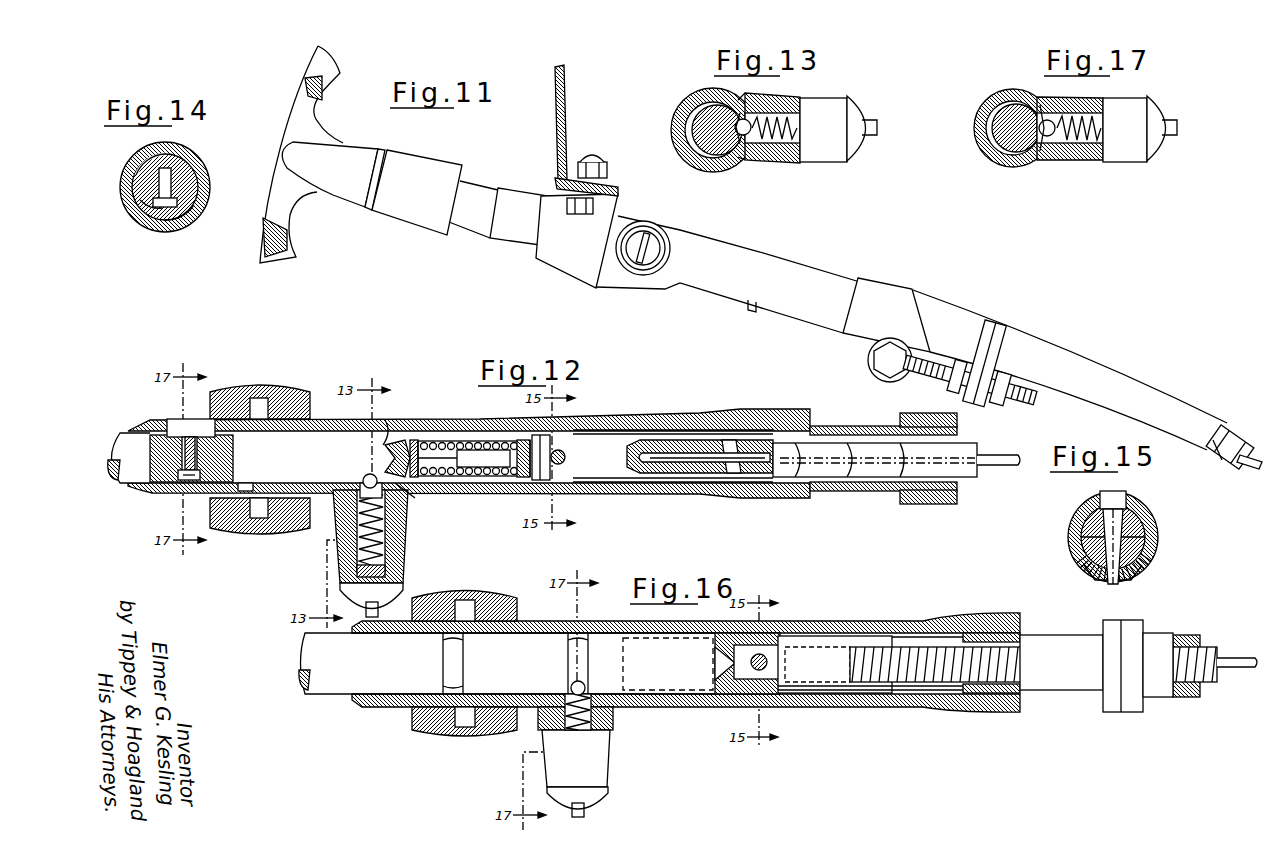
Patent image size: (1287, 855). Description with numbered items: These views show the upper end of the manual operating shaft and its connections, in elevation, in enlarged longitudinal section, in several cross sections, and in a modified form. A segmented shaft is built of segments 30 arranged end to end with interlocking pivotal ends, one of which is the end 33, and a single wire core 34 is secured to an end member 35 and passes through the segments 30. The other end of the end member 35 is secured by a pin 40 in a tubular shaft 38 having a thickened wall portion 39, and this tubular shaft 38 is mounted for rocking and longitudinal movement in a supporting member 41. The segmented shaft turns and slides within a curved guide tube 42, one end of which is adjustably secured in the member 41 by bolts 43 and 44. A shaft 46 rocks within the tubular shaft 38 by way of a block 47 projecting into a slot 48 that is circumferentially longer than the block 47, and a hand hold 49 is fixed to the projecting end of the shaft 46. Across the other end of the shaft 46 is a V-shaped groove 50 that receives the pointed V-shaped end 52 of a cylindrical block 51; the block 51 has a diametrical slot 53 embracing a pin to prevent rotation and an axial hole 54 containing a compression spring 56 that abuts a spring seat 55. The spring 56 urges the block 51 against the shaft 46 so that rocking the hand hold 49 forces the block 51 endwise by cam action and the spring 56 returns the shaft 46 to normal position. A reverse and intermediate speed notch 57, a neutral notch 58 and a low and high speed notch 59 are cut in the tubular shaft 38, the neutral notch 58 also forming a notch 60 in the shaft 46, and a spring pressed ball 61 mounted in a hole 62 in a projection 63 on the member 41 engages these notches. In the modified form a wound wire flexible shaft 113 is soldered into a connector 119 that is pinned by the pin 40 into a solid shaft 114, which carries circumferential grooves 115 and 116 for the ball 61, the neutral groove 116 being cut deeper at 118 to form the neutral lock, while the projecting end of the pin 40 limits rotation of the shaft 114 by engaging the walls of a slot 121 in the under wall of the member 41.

In FIG. 11, the segments 30 is at (1212, 452).
In FIG. 12, the segments 30 is at (867, 472).
In FIG. 11, the interlocking pivotal end 33 is at (1240, 436).
In FIG. 11, the wire core 34 is at (1246, 464).
In FIG. 12, the wire core 34 is at (707, 472).
In FIG. 16, the wire core 34 is at (1238, 668).
In FIG. 12, the end member 35 is at (670, 450).
In FIG. 15, the end member 35 is at (1085, 533).
In FIG. 14, the tubular shaft 38 is at (199, 206).
In FIG. 13, the tubular shaft 38 is at (676, 136).
In FIG. 12, the tubular shaft 38 is at (389, 418).
In FIG. 12, the thickened wall portion 39 is at (586, 426).
In FIG. 15, the thickened wall portion 39 is at (1142, 541).
In FIG. 11, the pin 40 is at (750, 309).
In FIG. 12, the pin 40 is at (566, 457).
In FIG. 15, the pin 40 is at (1109, 585).
In FIG. 16, the pin 40 is at (764, 655).
In FIG. 14, the supporting member 41 is at (194, 162).
In FIG. 11, the supporting member 41 is at (810, 273).
In FIG. 13, the supporting member 41 is at (752, 100).
In FIG. 17, the supporting member 41 is at (1005, 165).
In FIG. 12, the supporting member 41 is at (640, 425).
In FIG. 16, the supporting member 41 is at (812, 706).
In FIG. 11, the curved guide tube 42 is at (1105, 367).
In FIG. 16, the curved guide tube 42 is at (1071, 691).
In FIG. 14, the bolt 43 is at (142, 170).
In FIG. 11, the bolt 43 is at (884, 375).
In FIG. 12, the bolt 43 is at (955, 425).
In FIG. 11, the bolt 44 is at (948, 375).
In FIG. 14, the shaft 46 is at (195, 191).
In FIG. 13, the shaft 46 is at (703, 160).
In FIG. 12, the shaft 46 is at (318, 445).
In FIG. 14, the block 47 is at (170, 166).
In FIG. 12, the slot 48 is at (175, 428).
In FIG. 11, the hand hold 49 is at (355, 162).
In FIG. 12, the hand hold 49 is at (190, 436).
In FIG. 12, the V-shaped groove 50 is at (402, 442).
In FIG. 12, the cylindrical block 51 is at (456, 442).
In FIG. 12, the pointed V-shaped end 52 is at (424, 440).
In FIG. 12, the slot 53 is at (500, 458).
In FIG. 12, the axial hole 54 is at (488, 441).
In FIG. 12, the spring seat 55 is at (495, 494).
In FIG. 12, the compression spring 56 is at (452, 494).
In FIG. 12, the reverse and intermediate speed notch 57 is at (470, 494).
In FIG. 13, the neutral notch 58 is at (740, 165).
In FIG. 12, the neutral notch 58 is at (410, 496).
In FIG. 12, the low and high speed notch 59 is at (242, 492).
In FIG. 13, the notch 60 is at (751, 160).
In FIG. 12, the notch 60 is at (375, 474).
In FIG. 13, the spring pressed ball 61 is at (750, 116).
In FIG. 17, the spring pressed ball 61 is at (1050, 160).
In FIG. 12, the spring pressed ball 61 is at (362, 480).
In FIG. 16, the spring pressed ball 61 is at (588, 690).
In FIG. 13, the hole 62 is at (778, 160).
In FIG. 17, the hole 62 is at (1090, 160).
In FIG. 12, the hole 62 is at (392, 522).
In FIG. 16, the hole 62 is at (598, 720).
In FIG. 11, the projection 63 is at (668, 258).
In FIG. 13, the projection 63 is at (822, 160).
In FIG. 17, the projection 63 is at (1122, 152).
In FIG. 12, the projection 63 is at (398, 563).
In FIG. 16, the projection 63 is at (608, 765).
In FIG. 16, the wound wire flexible shaft 113 is at (915, 686).
In FIG. 17, the solid shaft 114 is at (982, 130).
In FIG. 15, the solid shaft 114 is at (1150, 539).
In FIG. 16, the solid shaft 114 is at (337, 689).
In FIG. 16, the circumferential groove 115 is at (452, 665).
In FIG. 17, the circumferential groove 116 is at (1000, 96).
In FIG. 17, the neutral lock 118 is at (1062, 108).
In FIG. 15, the connector 119 is at (1090, 534).
In FIG. 16, the connector 119 is at (832, 652).
In FIG. 12, the slot 121 is at (648, 486).
In FIG. 15, the slot 121 is at (1090, 570).
In FIG. 16, the slot 121 is at (870, 690).